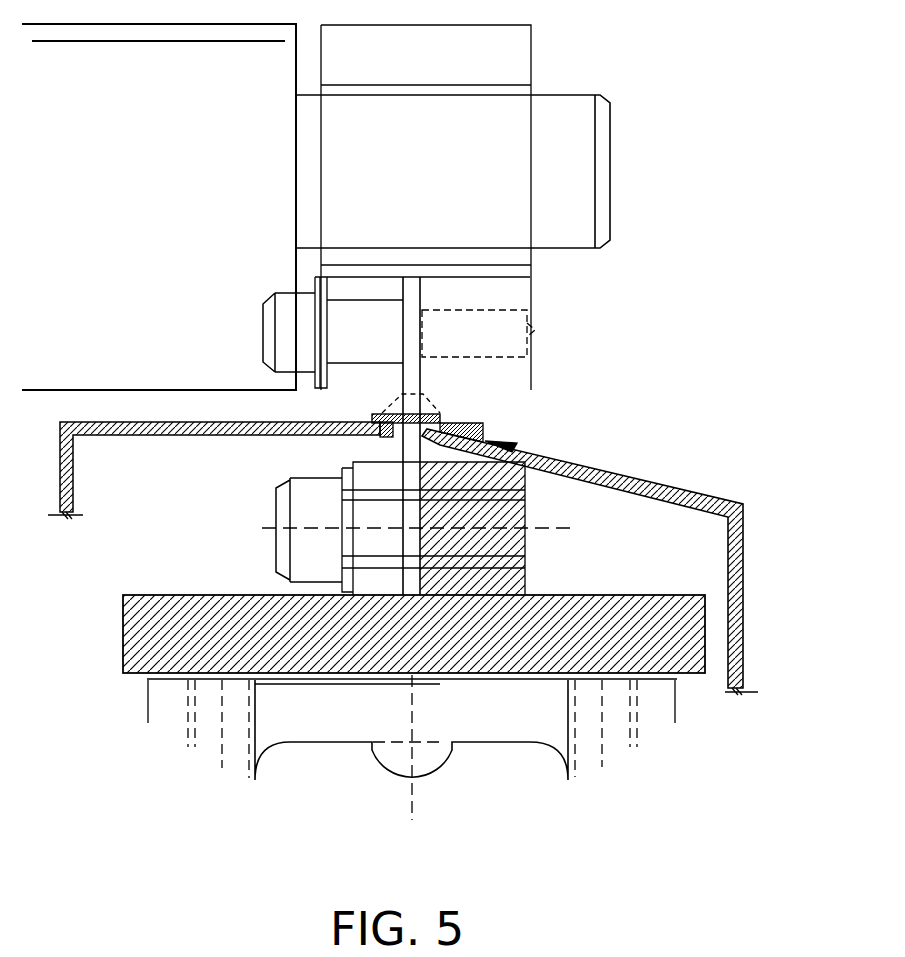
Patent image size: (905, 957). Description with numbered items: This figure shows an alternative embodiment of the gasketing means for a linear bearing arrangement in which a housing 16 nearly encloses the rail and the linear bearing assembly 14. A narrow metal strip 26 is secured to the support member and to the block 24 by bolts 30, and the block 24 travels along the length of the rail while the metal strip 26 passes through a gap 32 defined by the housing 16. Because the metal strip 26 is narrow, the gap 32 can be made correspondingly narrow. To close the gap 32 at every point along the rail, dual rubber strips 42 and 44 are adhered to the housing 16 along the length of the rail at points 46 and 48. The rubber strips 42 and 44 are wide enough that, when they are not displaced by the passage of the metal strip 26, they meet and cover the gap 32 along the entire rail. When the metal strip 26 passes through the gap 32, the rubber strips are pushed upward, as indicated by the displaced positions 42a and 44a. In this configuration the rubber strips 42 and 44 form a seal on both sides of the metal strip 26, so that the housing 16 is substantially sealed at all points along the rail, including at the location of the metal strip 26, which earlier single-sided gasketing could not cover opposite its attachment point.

The linear bearing assembly 14 is at (677, 700).
The housing 16 is at (747, 583).
The block 24 is at (533, 732).
The metal strip 26 is at (414, 292).
The bolts 30 is at (262, 330).
The gap 32 is at (425, 436).
The rubber strip 42 is at (468, 422).
The upwardly displaced position of rubber strip 42a is at (427, 398).
The rubber strip 44 is at (380, 418).
The upwardly displaced position of rubber strip 44a is at (397, 398).
The attachment point 46 is at (517, 446).
The attachment point 48 is at (383, 436).